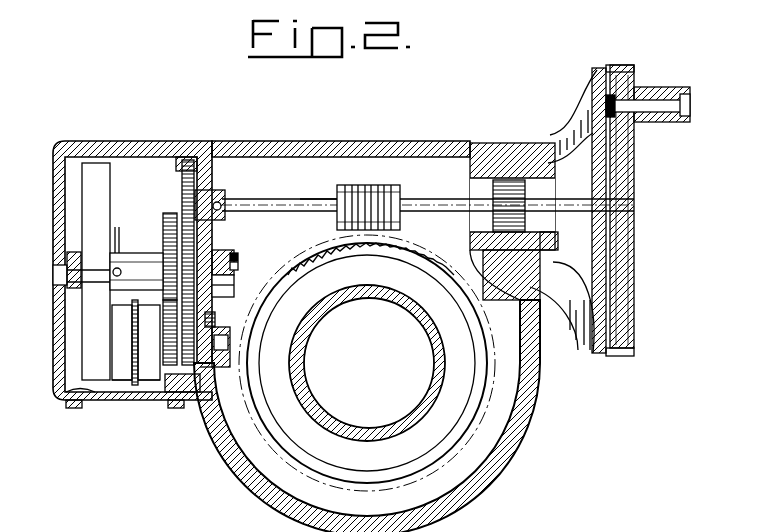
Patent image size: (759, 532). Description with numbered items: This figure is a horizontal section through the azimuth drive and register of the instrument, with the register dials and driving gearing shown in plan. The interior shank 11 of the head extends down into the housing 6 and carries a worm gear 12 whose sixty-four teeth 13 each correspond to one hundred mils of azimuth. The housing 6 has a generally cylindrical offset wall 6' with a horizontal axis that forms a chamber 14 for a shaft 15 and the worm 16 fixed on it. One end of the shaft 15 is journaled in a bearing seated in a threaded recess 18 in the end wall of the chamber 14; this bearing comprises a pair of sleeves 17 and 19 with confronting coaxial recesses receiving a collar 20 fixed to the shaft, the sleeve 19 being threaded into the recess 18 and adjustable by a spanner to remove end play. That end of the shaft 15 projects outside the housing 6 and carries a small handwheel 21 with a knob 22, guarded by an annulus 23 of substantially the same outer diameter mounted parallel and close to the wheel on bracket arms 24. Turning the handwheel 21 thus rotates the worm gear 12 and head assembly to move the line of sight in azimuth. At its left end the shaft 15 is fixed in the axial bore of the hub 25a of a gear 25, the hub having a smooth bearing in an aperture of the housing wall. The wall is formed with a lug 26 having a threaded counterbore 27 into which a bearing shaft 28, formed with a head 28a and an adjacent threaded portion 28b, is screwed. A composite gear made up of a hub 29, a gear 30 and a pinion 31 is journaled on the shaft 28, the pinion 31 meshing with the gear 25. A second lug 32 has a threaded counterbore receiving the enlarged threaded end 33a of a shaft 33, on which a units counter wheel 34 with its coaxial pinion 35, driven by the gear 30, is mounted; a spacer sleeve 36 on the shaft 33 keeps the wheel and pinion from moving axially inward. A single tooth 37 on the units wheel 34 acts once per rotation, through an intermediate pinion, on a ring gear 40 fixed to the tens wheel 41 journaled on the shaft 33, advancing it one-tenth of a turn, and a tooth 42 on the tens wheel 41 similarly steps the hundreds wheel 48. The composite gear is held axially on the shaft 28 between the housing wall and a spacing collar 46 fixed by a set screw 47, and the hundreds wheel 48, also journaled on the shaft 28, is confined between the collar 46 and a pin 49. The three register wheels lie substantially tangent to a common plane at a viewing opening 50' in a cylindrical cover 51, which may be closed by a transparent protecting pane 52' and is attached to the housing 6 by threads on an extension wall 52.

The housing 6 is at (367, 391).
The offset wall 6' is at (341, 132).
The shank 11 is at (442, 389).
The worm gear 12 is at (367, 363).
The teeth 13 is at (320, 244).
The chamber 14 is at (428, 188).
The shaft 15 is at (319, 206).
The worm 16 is at (394, 187).
The sleeve 17 is at (490, 146).
The threaded recess 18 is at (480, 264).
The sleeve 19 is at (548, 247).
The collar 20 is at (493, 192).
The handwheel 21 is at (634, 352).
The knob 22 is at (670, 118).
The annulus 23 is at (601, 356).
The bracket arms 24 is at (590, 78).
The gear 25 is at (178, 165).
The hub 25a is at (214, 190).
The lug 26 is at (220, 256).
The threaded counterbore 27 is at (224, 289).
The bearing shaft 28 is at (54, 284).
The head 28a is at (236, 254).
The threaded portion 28b is at (238, 264).
The hub 29 is at (140, 256).
The gear 30 is at (168, 213).
The pinion 31 is at (179, 329).
The lug 32 is at (222, 367).
The shaft 33 is at (212, 316).
The enlarged threaded end 33a is at (226, 342).
The units counter wheel 34 is at (150, 398).
The pinion 35 is at (176, 400).
The spacer sleeve 36 is at (216, 373).
The tooth 37 is at (149, 336).
The ring gear 40 is at (135, 386).
The tens wheel 41 is at (114, 396).
The tooth 42 is at (123, 336).
The spacing collar 46 is at (124, 236).
The set screw 47 is at (121, 271).
The hundreds wheel 48 is at (97, 163).
The pin 49 is at (68, 270).
The viewing opening 50' is at (56, 382).
The cylindrical cover 51 is at (62, 170).
The extension wall 52 is at (187, 240).
The transparent protecting pane 52' is at (123, 422).